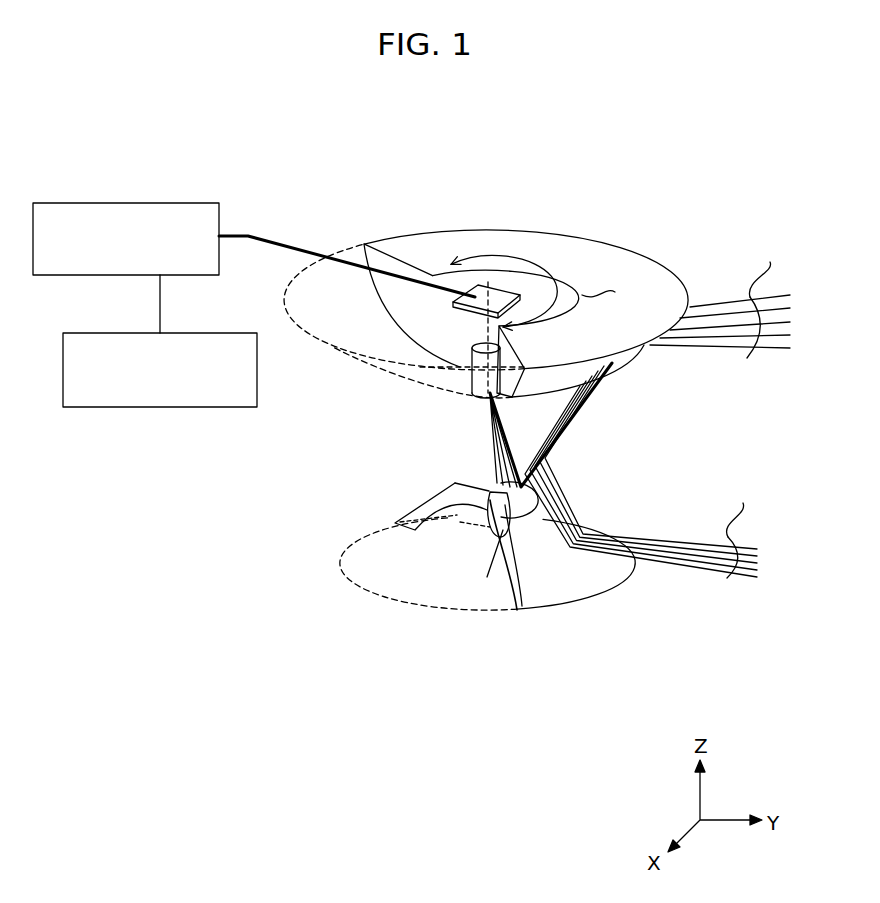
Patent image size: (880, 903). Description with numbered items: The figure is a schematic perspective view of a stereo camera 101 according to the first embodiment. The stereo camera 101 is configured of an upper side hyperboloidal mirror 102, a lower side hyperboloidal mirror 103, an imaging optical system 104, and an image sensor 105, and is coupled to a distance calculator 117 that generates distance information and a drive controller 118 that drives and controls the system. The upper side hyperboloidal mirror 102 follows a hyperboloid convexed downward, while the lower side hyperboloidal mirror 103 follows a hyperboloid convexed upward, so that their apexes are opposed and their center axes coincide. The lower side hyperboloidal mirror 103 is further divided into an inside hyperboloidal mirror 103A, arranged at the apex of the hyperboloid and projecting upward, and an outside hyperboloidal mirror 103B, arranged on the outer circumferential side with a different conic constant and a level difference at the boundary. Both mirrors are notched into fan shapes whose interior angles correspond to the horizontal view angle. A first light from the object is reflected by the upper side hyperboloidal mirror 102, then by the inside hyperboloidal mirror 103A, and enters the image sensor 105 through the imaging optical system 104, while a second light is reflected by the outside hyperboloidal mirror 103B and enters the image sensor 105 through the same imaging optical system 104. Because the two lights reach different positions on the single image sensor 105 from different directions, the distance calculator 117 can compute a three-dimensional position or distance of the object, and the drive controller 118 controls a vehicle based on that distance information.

The stereo camera 101 is at (627, 182).
The upper side hyperboloidal mirror 102 is at (627, 250).
The lower side hyperboloidal mirror 103 is at (538, 587).
The inside hyperboloidal mirror 103A is at (543, 513).
The outside hyperboloidal mirror 103B is at (540, 604).
The imaging optical system 104 is at (470, 378).
The image sensor 105 is at (483, 302).
The distance calculator 117 is at (163, 203).
The drive controller 118 is at (188, 333).